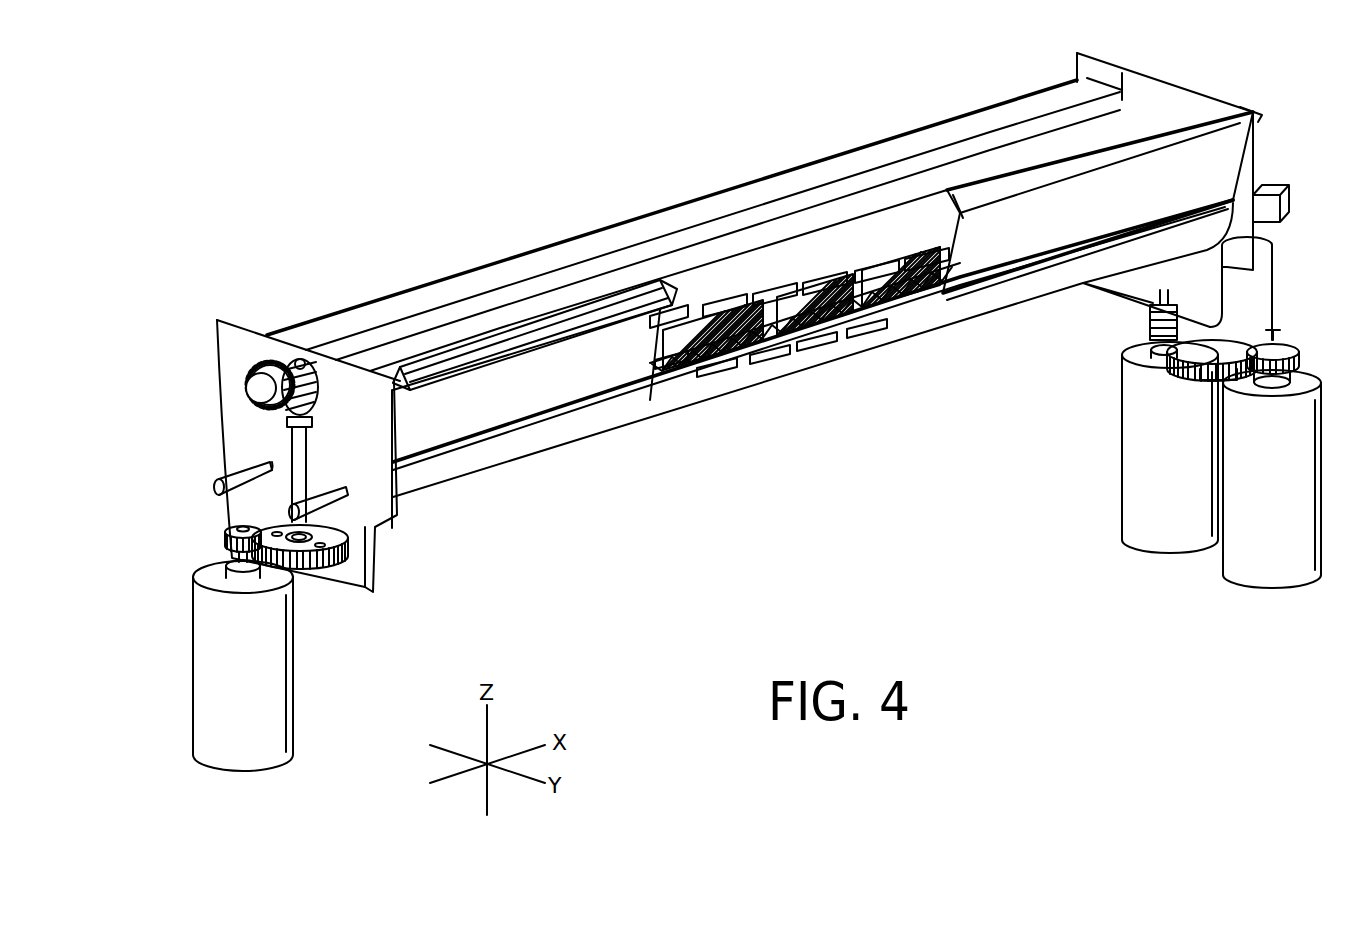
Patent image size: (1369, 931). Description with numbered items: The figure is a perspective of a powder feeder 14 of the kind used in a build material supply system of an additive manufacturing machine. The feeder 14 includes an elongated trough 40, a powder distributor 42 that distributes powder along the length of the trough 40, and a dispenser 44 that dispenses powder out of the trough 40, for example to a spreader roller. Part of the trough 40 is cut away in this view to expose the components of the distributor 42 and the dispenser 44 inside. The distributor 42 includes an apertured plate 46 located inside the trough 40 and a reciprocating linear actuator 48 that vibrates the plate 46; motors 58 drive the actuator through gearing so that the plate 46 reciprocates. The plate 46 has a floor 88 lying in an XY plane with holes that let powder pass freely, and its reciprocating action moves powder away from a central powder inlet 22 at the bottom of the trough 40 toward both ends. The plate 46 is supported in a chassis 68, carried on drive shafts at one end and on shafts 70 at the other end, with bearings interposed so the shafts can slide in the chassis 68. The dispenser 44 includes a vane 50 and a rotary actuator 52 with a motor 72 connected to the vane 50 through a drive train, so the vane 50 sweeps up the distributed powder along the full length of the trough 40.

The feeder 14 is at (240, 270).
The powder inlet 22 is at (775, 368).
The trough 40 is at (590, 427).
The powder distributor 42 is at (1318, 122).
The dispenser 44 is at (188, 325).
The apertured plate 46 is at (890, 322).
The reciprocating linear actuator 48 is at (1306, 318).
The vane 50 is at (470, 330).
The rotary actuator 52 is at (232, 379).
The motors 58 is at (1240, 570).
The chassis 68 is at (1082, 66).
The shafts 70 is at (232, 475).
The motor 72 is at (205, 682).
The floor 88 is at (705, 388).